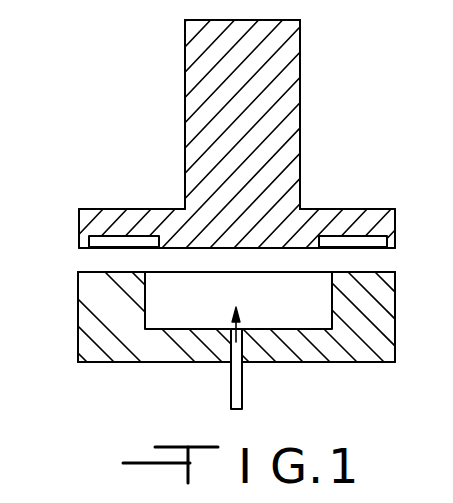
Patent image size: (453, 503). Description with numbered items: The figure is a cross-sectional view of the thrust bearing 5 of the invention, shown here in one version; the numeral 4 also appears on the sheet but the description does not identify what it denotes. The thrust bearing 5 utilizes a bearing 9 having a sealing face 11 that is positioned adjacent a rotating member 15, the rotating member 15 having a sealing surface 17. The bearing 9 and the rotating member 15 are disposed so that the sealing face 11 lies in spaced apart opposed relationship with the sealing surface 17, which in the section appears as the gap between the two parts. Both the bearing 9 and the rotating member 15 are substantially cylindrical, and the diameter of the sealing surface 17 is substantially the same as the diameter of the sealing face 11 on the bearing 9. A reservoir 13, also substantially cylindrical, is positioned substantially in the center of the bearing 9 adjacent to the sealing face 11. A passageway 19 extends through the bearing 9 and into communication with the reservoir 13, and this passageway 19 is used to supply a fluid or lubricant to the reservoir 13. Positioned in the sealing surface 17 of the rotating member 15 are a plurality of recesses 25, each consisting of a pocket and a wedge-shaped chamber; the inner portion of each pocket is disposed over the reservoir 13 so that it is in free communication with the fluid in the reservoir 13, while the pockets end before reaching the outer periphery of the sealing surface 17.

The assembly 4 is at (262, 191).
The thrust bearing 5 is at (318, 103).
The rotating member 15 is at (212, 103).
The sealing surface 17 is at (116, 248).
The recess 25 is at (358, 237).
The bearing 9 is at (370, 363).
The sealing face 11 is at (367, 268).
The reservoir 13 is at (174, 308).
The passageway 19 is at (243, 383).